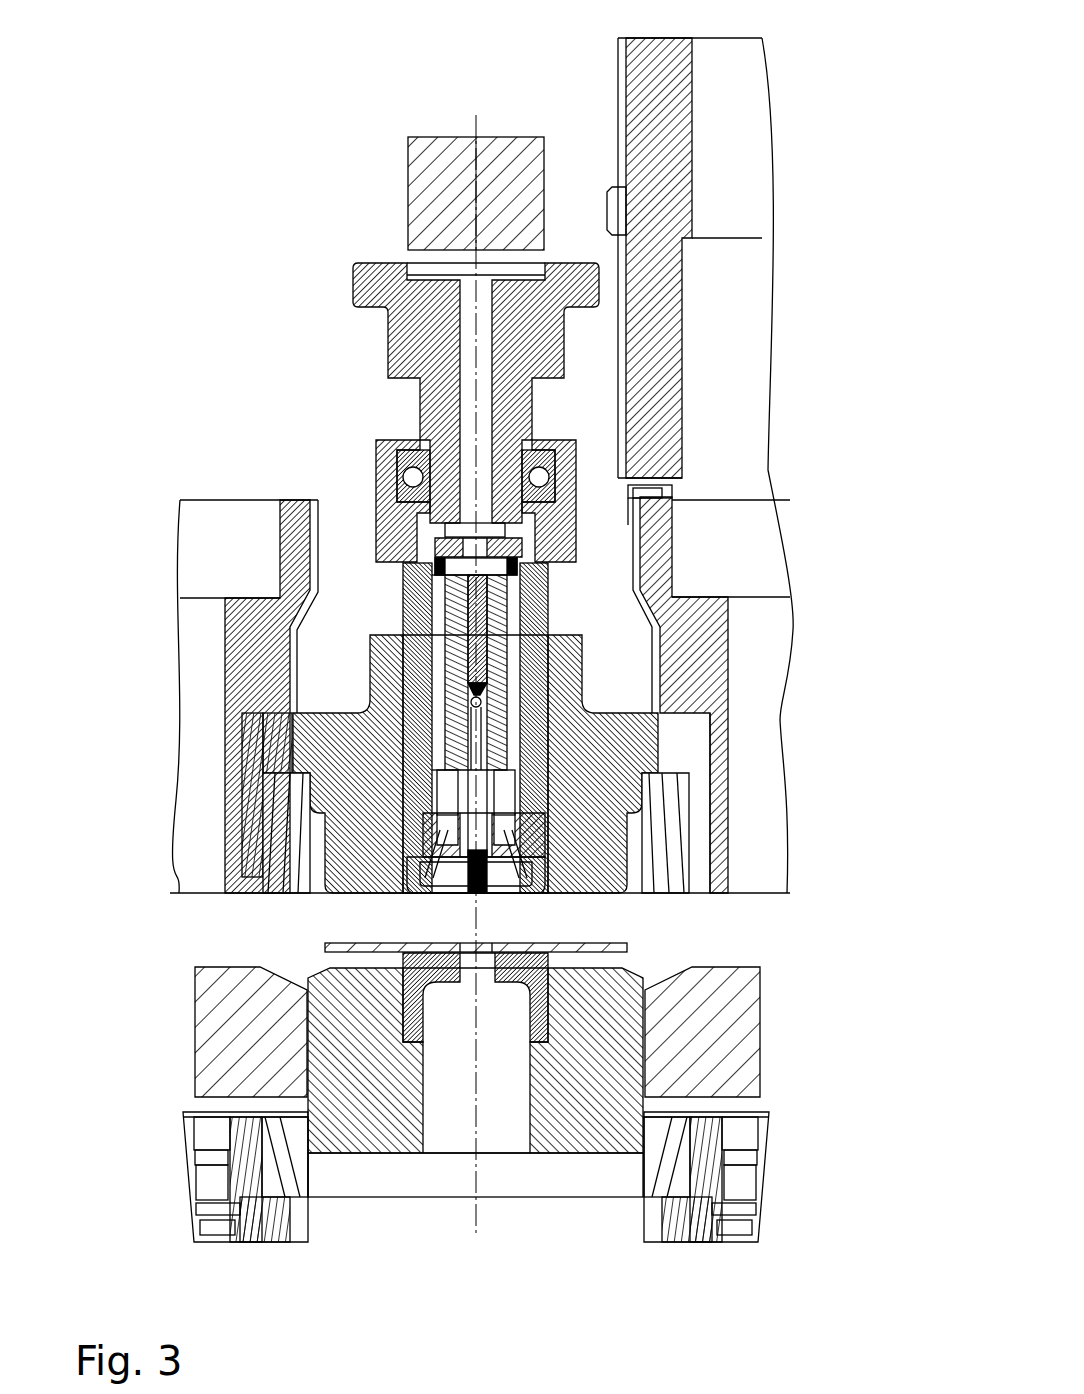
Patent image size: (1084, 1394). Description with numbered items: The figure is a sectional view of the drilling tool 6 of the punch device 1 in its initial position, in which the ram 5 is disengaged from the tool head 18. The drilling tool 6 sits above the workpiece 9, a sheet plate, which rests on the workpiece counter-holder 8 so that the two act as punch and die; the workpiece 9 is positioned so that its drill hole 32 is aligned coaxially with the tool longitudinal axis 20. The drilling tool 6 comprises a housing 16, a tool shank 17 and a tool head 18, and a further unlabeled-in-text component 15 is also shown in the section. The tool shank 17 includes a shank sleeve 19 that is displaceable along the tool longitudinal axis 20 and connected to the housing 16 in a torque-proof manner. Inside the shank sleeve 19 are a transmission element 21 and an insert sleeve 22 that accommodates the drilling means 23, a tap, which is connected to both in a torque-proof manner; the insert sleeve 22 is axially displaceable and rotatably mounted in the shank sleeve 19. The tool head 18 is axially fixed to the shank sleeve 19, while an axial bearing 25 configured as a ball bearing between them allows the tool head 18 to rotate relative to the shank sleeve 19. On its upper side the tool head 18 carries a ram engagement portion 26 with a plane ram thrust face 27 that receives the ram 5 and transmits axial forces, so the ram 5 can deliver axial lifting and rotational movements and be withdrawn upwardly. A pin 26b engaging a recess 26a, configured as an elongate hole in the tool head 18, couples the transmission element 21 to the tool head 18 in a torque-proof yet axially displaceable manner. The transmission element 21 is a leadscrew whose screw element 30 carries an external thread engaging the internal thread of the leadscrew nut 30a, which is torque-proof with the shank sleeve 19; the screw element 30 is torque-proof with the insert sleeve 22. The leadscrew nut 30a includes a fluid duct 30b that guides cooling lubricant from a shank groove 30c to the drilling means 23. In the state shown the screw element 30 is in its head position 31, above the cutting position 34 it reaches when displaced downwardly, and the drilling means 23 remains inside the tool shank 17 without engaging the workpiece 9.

The punch device 1 is at (386, 104).
The ram 5 is at (428, 226).
The drilling tool 6 is at (325, 313).
The workpiece counter-holder 8 is at (302, 1058).
The workpiece 9 is at (500, 942).
The holder block 15 is at (720, 735).
The housing 16 is at (660, 749).
The tool shank 17 is at (578, 477).
The tool head 18 is at (568, 347).
The shank sleeve 19 is at (560, 518).
The tool longitudinal axis 20 is at (475, 183).
The transmission element 21 is at (505, 600).
The insert sleeve 22 is at (500, 793).
The drilling means 23 is at (477, 887).
The axial bearing 25 is at (553, 458).
The ram engagement portion 26 is at (528, 275).
The recess 26a is at (433, 582).
The pin 26b is at (433, 568).
The ram thrust face 27 is at (505, 283).
The screw element 30 is at (452, 792).
The leadscrew nut 30a is at (533, 828).
The fluid duct 30b is at (440, 850).
The shank groove 30c is at (440, 742).
The head position 31 is at (440, 537).
The drill hole 32 is at (473, 947).
The cutting position 34 is at (403, 641).